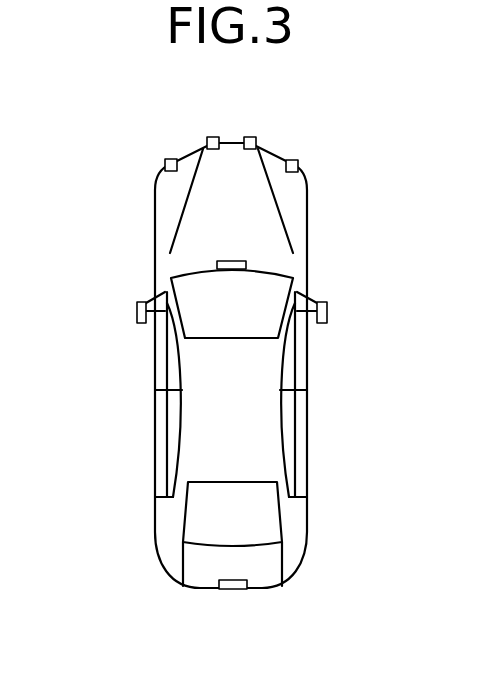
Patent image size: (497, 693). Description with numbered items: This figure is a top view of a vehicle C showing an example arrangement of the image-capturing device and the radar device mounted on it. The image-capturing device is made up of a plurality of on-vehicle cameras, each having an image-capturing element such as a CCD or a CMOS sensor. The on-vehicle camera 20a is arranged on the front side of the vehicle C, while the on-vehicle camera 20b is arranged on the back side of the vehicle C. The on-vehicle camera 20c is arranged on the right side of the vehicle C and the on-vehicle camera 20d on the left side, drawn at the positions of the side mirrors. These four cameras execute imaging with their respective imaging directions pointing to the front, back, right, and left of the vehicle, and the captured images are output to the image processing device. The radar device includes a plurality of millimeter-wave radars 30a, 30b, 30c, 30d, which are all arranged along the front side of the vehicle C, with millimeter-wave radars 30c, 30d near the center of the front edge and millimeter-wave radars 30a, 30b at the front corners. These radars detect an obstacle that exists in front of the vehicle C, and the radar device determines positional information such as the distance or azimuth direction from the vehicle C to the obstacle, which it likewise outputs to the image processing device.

The vehicle C is at (307, 377).
The on-vehicle camera 20a is at (247, 263).
The on-vehicle camera 20b is at (230, 591).
The on-vehicle camera 20c is at (328, 309).
The on-vehicle camera 20d is at (137, 310).
The millimeter-wave radar 30a is at (298, 165).
The millimeter-wave radar 30b is at (165, 165).
The millimeter-wave radar 30c is at (256, 142).
The millimeter-wave radar 30d is at (207, 142).